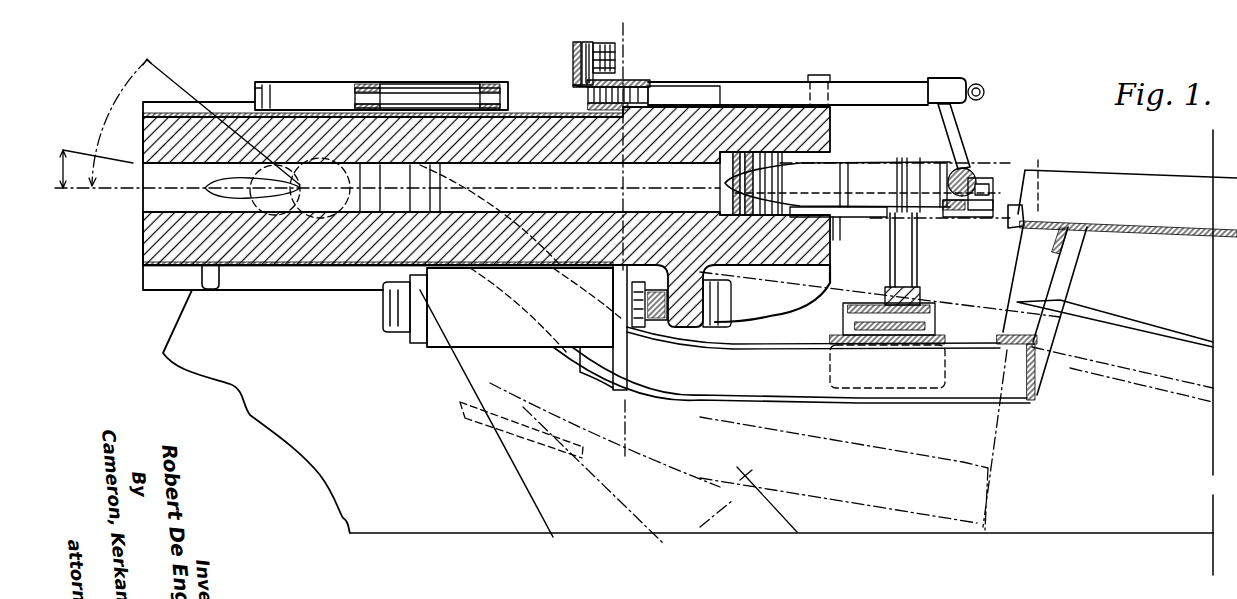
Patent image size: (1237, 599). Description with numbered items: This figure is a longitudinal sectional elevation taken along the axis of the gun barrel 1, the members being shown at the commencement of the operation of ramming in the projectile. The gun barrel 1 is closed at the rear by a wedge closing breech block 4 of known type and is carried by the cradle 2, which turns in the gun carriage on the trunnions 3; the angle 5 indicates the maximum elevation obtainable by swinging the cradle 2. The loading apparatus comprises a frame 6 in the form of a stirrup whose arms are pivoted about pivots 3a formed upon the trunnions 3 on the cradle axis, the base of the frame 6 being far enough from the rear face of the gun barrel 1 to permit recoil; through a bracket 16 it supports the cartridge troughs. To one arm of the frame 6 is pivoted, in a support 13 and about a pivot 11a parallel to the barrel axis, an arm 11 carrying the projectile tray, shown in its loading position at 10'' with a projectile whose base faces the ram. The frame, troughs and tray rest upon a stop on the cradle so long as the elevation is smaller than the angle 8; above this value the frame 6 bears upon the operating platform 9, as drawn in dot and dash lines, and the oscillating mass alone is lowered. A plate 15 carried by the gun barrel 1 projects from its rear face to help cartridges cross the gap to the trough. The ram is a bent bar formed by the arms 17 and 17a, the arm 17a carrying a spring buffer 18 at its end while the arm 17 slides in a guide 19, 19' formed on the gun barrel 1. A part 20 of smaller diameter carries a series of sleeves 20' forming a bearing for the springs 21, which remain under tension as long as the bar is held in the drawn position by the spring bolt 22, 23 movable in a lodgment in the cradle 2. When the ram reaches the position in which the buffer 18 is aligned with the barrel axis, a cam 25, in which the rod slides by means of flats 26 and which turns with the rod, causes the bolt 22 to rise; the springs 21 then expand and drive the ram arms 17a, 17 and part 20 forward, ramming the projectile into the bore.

The gun barrel 1 is at (515, 135).
The cradle 2 is at (540, 110).
The trunnions 3 is at (275, 268).
The pivots 3a is at (300, 268).
The wedge closing breech block 4 is at (633, 241).
The maximum angle of elevation 5 is at (120, 122).
The frame 6 is at (1022, 400).
The angle 8 is at (54, 169).
The operating platform 9 is at (1051, 527).
The projectile loading tray 10'' is at (968, 219).
The arm 11 is at (889, 255).
The pivot 11a is at (845, 313).
The support 13 is at (835, 336).
The plate 15 is at (860, 218).
The bracket 16 is at (1070, 245).
The ram arm 17 is at (900, 92).
The ram arm 17a is at (965, 132).
The spring buffer 18 is at (974, 172).
The guide 19 is at (817, 78).
The guide 19' is at (637, 85).
The part of smaller diameter 20 is at (427, 82).
The sleeves 20' is at (433, 82).
The springs 21 is at (476, 90).
The spring bolt 22 is at (592, 43).
The spring bolt 23 is at (573, 62).
The cam 25 is at (620, 80).
The flats 26 is at (706, 90).